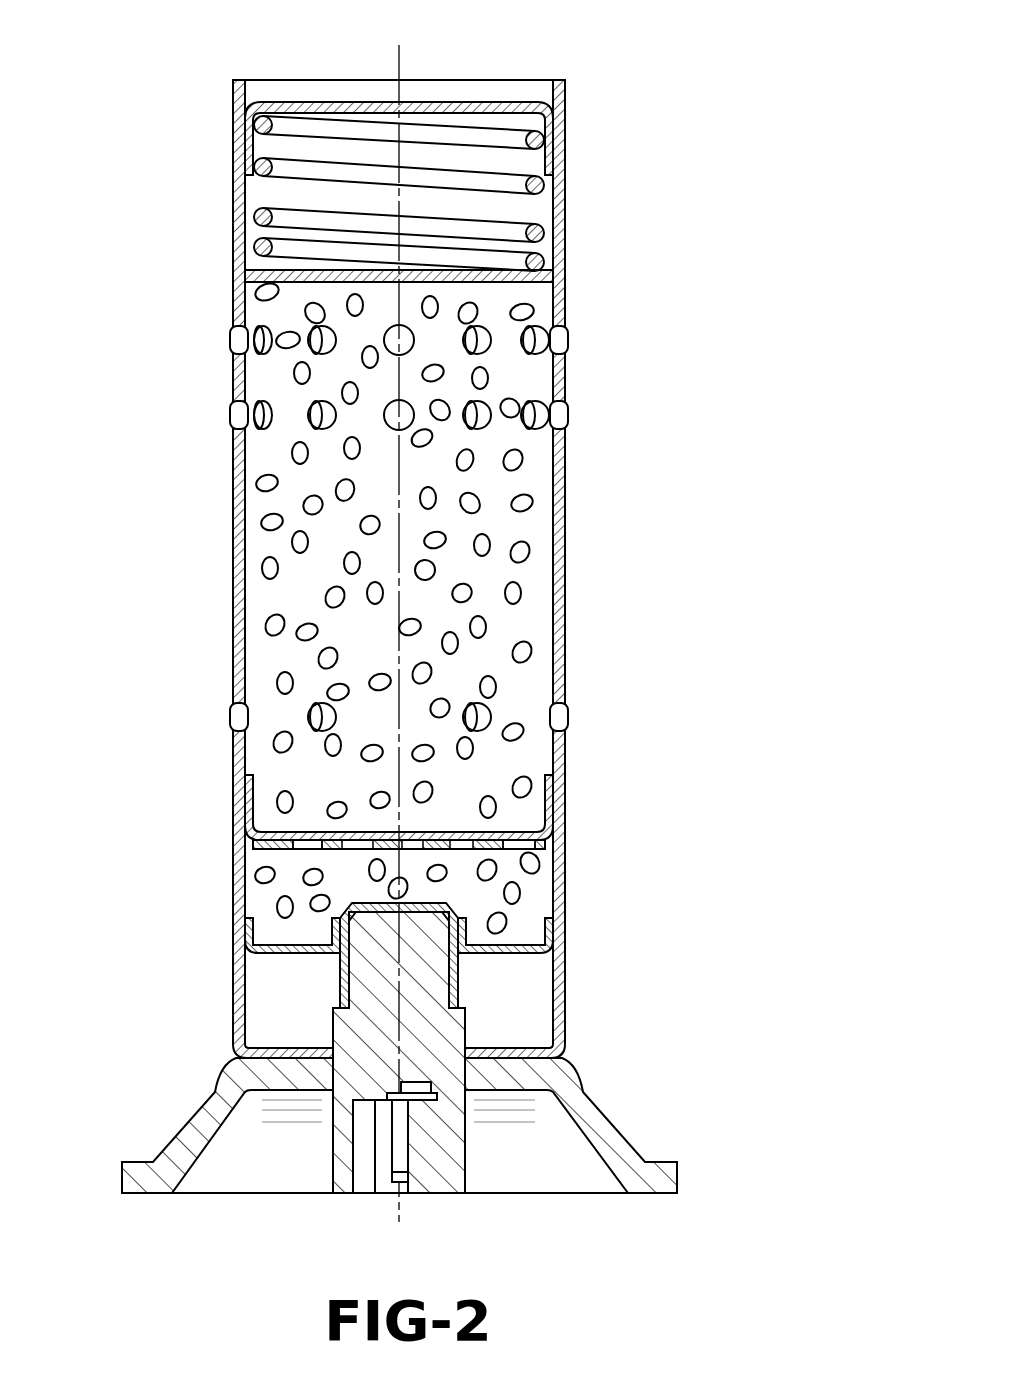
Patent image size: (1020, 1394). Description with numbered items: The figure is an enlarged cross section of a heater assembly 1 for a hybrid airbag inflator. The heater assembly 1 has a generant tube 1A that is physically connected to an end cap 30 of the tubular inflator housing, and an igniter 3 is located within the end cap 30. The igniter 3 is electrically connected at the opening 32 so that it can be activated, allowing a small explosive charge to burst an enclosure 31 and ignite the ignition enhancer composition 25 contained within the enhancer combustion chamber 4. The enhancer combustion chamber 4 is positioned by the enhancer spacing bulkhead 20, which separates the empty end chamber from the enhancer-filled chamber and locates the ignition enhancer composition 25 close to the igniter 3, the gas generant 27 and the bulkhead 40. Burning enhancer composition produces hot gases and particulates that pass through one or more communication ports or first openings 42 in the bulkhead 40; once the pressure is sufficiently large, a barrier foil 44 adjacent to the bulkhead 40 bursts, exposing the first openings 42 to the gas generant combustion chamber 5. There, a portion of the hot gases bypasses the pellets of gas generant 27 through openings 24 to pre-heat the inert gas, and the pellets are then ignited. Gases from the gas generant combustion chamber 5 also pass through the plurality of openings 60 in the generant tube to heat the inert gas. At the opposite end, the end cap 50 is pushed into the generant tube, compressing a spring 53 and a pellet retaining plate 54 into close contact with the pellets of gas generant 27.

The heater assembly 1 is at (664, 146).
The generant tube 1A is at (566, 548).
The igniter 3 is at (360, 1036).
The enhancer combustion chamber 4 is at (505, 882).
The gas generant combustion chamber 5 is at (330, 570).
The enhancer spacing bulkhead 20 is at (548, 940).
The openings 24 is at (478, 720).
The ignition enhancer composition 25 is at (500, 918).
The gas generant 27 is at (330, 658).
The end cap 30 is at (605, 1148).
The enclosure 31 is at (388, 907).
The opening 32 is at (402, 1157).
The bulkhead 40 is at (258, 842).
The first openings 42 is at (303, 848).
The barrier foil 44 is at (275, 832).
The end cap 50 is at (262, 110).
The spring 53 is at (321, 127).
The pellet retaining plate 54 is at (273, 278).
The openings 60 is at (536, 360).